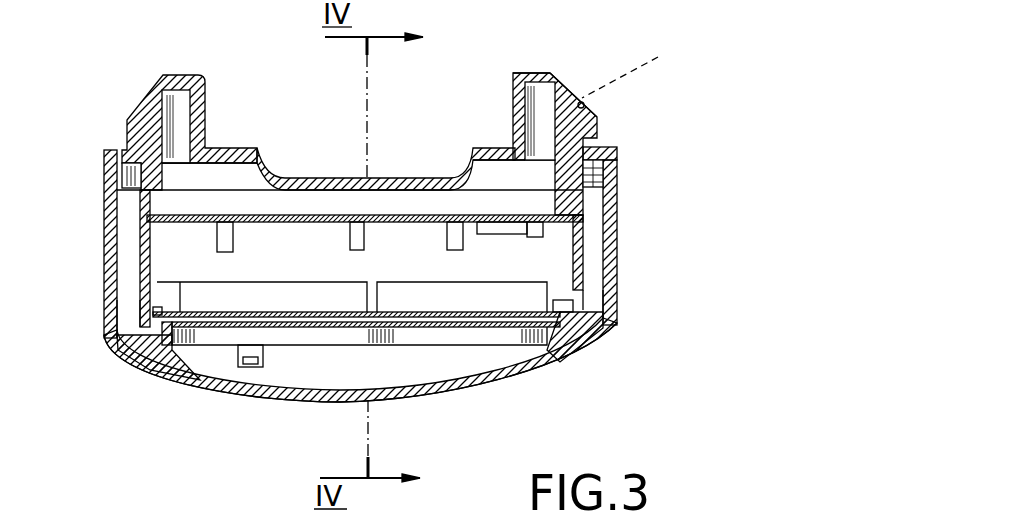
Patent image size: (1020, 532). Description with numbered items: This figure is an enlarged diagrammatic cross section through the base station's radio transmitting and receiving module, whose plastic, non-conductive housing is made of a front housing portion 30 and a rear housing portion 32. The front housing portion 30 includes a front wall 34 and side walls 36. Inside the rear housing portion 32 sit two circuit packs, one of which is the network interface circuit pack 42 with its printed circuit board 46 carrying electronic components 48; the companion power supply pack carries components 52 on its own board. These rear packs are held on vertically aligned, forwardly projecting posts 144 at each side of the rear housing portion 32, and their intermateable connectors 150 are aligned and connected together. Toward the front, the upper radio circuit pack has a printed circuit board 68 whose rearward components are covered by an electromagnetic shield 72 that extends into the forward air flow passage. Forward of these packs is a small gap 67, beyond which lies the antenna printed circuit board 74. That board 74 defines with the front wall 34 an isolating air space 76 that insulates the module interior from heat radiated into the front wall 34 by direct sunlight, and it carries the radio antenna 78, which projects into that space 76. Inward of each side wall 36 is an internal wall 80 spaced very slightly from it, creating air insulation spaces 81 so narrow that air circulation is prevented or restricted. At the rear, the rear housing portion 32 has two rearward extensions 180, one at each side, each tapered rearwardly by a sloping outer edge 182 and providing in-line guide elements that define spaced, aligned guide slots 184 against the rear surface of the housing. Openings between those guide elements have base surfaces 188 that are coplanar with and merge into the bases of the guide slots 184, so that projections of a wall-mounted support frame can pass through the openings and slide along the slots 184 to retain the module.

The front housing portion 30 is at (265, 400).
The rear housing portion 32 is at (540, 75).
The front wall 34 is at (520, 365).
The side walls 36 is at (110, 322).
The circuit pack 42 is at (230, 207).
The printed circuit board 46 is at (345, 245).
The electronic components 48 is at (585, 221).
The components 52 is at (240, 248).
The gap 67 is at (447, 320).
The printed circuit board 68 is at (228, 360).
The electromagnetic shield 72 is at (138, 293).
The antenna printed circuit board 74 is at (553, 362).
The isolating air space 76 is at (487, 350).
The radio antenna 78 is at (338, 340).
The internal wall 80 is at (143, 248).
The air insulation spaces 81 is at (132, 333).
The forwardly projecting posts 144 is at (150, 198).
The intermateable connectors 150 is at (487, 225).
The rearward extensions 180 is at (140, 110).
The sloping outer edge 182 is at (577, 90).
The guide slots 184 is at (595, 145).
The base surfaces 188 is at (642, 73).